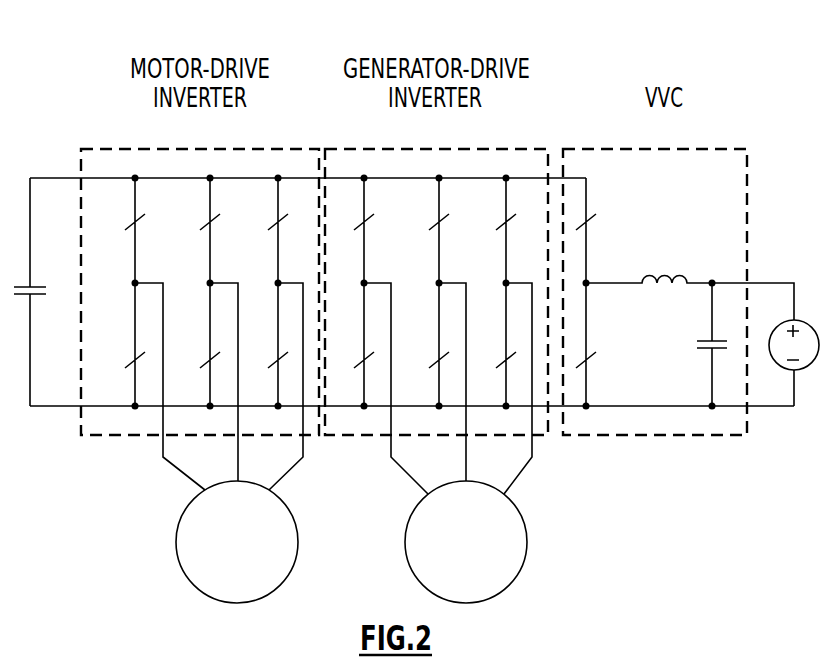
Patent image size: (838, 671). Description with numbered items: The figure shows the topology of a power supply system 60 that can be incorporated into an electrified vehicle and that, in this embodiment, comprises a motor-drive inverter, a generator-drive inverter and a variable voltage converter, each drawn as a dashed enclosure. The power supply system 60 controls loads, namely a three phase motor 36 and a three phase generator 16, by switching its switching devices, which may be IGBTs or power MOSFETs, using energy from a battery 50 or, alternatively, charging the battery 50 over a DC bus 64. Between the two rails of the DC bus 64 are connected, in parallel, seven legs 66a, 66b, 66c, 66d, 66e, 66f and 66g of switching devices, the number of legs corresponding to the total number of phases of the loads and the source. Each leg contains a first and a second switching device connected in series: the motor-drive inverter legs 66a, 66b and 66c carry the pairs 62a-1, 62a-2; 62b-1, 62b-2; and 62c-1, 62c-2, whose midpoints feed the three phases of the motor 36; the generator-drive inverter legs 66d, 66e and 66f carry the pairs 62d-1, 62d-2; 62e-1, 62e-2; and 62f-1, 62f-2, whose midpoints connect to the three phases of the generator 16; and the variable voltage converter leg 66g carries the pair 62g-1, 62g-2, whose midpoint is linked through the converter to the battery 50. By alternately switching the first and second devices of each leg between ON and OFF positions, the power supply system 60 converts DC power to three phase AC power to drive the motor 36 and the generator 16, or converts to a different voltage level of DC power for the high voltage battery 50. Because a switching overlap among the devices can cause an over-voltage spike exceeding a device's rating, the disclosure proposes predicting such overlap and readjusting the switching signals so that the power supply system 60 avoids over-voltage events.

The power supply system 60 is at (306, 90).
The DC bus 64 is at (42, 378).
The first switching device of leg 66a 62a-1 is at (123, 214).
The second switching device of leg 66a 62a-2 is at (128, 366).
The first switching device of leg 66b 62b-1 is at (200, 214).
The second switching device of leg 66b 62b-2 is at (200, 366).
The first switching device of leg 66c 62c-1 is at (275, 214).
The second switching device of leg 66c 62c-2 is at (281, 368).
The first switching device of leg 66d 62d-1 is at (365, 214).
The second switching device of leg 66d 62d-2 is at (357, 366).
The first switching device of leg 66e 62e-1 is at (441, 214).
The second switching device of leg 66e 62e-2 is at (441, 366).
The first switching device of leg 66f 62f-1 is at (509, 214).
The second switching device of leg 66f 62f-2 is at (505, 366).
The first switching device of leg 66g 62g-1 is at (588, 214).
The second switching device of leg 66g 62g-2 is at (588, 356).
The leg of switching devices 66a is at (133, 403).
The leg of switching devices 66b is at (208, 408).
The leg of switching devices 66c is at (276, 408).
The leg of switching devices 66d is at (366, 407).
The leg of switching devices 66e is at (437, 403).
The leg of switching devices 66f is at (504, 404).
The leg of switching devices 66g is at (587, 404).
The battery 50 is at (769, 347).
The motor 36 is at (299, 540).
The generator 16 is at (528, 540).